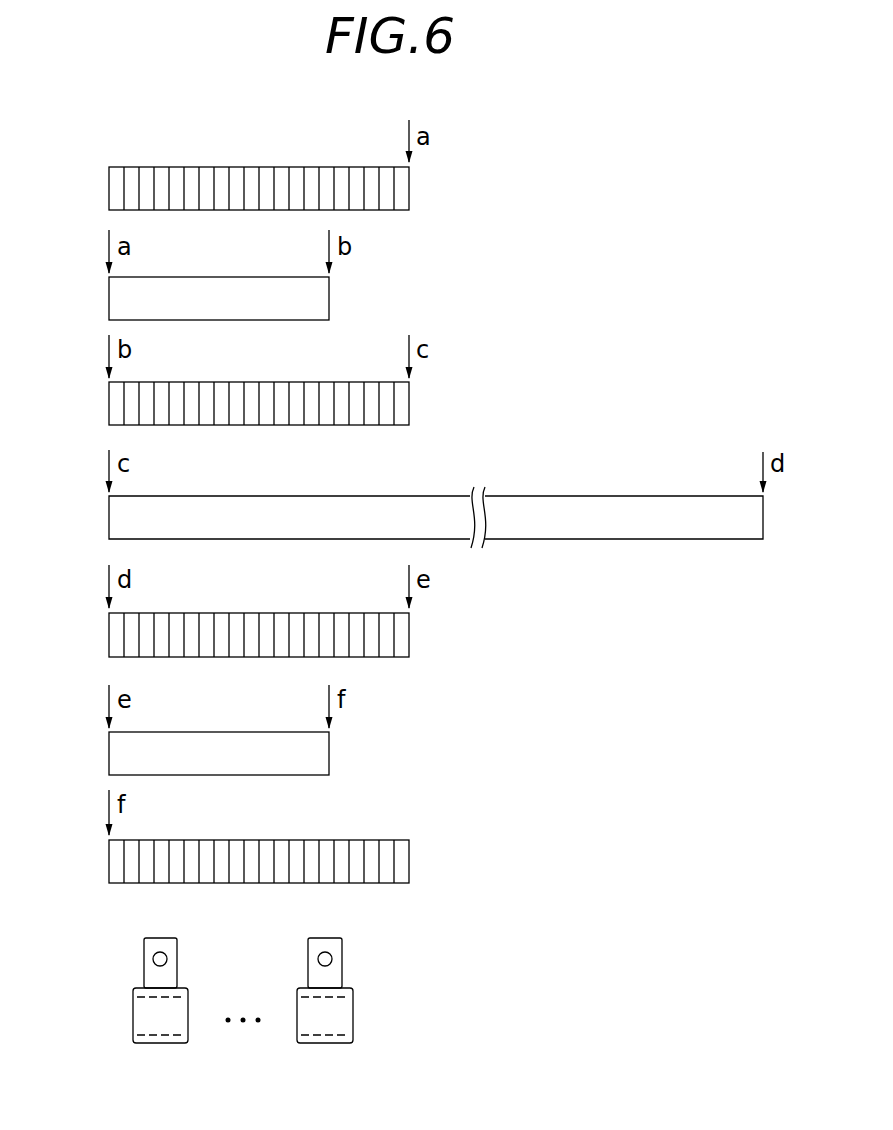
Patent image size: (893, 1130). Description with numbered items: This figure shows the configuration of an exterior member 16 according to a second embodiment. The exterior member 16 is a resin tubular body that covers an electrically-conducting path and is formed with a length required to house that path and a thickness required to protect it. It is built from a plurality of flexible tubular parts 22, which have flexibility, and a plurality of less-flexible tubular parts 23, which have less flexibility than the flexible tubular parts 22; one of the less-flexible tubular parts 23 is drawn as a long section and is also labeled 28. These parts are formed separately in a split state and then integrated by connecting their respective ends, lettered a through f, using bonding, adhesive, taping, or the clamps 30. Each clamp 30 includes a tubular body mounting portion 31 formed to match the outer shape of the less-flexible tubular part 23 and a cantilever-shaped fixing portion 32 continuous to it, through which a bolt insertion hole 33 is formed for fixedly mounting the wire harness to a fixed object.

The exterior member 16 is at (672, 224).
The flexible tubular part 22 is at (268, 167).
The less-flexible tubular part 23 is at (436, 502).
The long covered portion 28 is at (293, 496).
The clamp 30 is at (133, 1000).
The tubular body mounting portion 31 is at (138, 1024).
The fixing portion 32 is at (144, 944).
The bolt insertion hole 33 is at (167, 959).